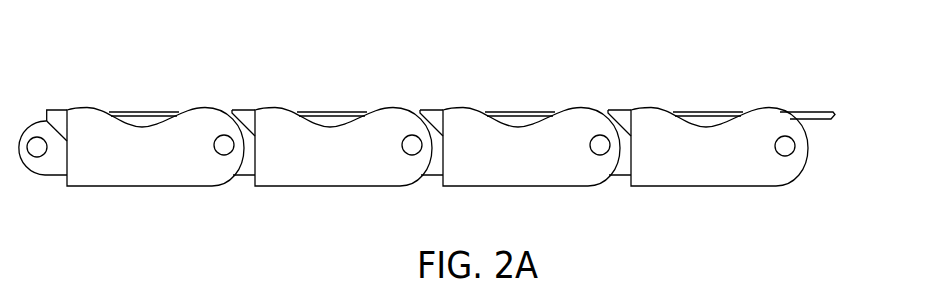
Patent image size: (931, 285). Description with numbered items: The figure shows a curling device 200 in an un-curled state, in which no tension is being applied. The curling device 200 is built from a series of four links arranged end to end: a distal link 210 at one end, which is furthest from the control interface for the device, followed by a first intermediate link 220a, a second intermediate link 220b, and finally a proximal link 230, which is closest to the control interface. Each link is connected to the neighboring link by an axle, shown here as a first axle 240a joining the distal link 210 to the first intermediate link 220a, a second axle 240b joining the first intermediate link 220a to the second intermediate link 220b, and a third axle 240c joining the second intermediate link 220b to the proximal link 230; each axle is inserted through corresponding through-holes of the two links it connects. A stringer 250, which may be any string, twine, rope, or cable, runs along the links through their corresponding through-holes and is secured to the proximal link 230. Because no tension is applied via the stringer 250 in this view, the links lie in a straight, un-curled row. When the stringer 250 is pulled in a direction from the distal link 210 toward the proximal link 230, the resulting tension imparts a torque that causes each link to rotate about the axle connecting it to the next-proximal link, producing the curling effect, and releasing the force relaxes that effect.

The curling device 200 is at (766, 54).
The distal link 210 is at (153, 150).
The first intermediate link 220a is at (340, 150).
The second intermediate link 220b is at (528, 150).
The proximal link 230 is at (716, 150).
The first axle 240a is at (224, 146).
The second axle 240b is at (412, 146).
The third axle 240c is at (600, 146).
The stringer 250 is at (150, 113).